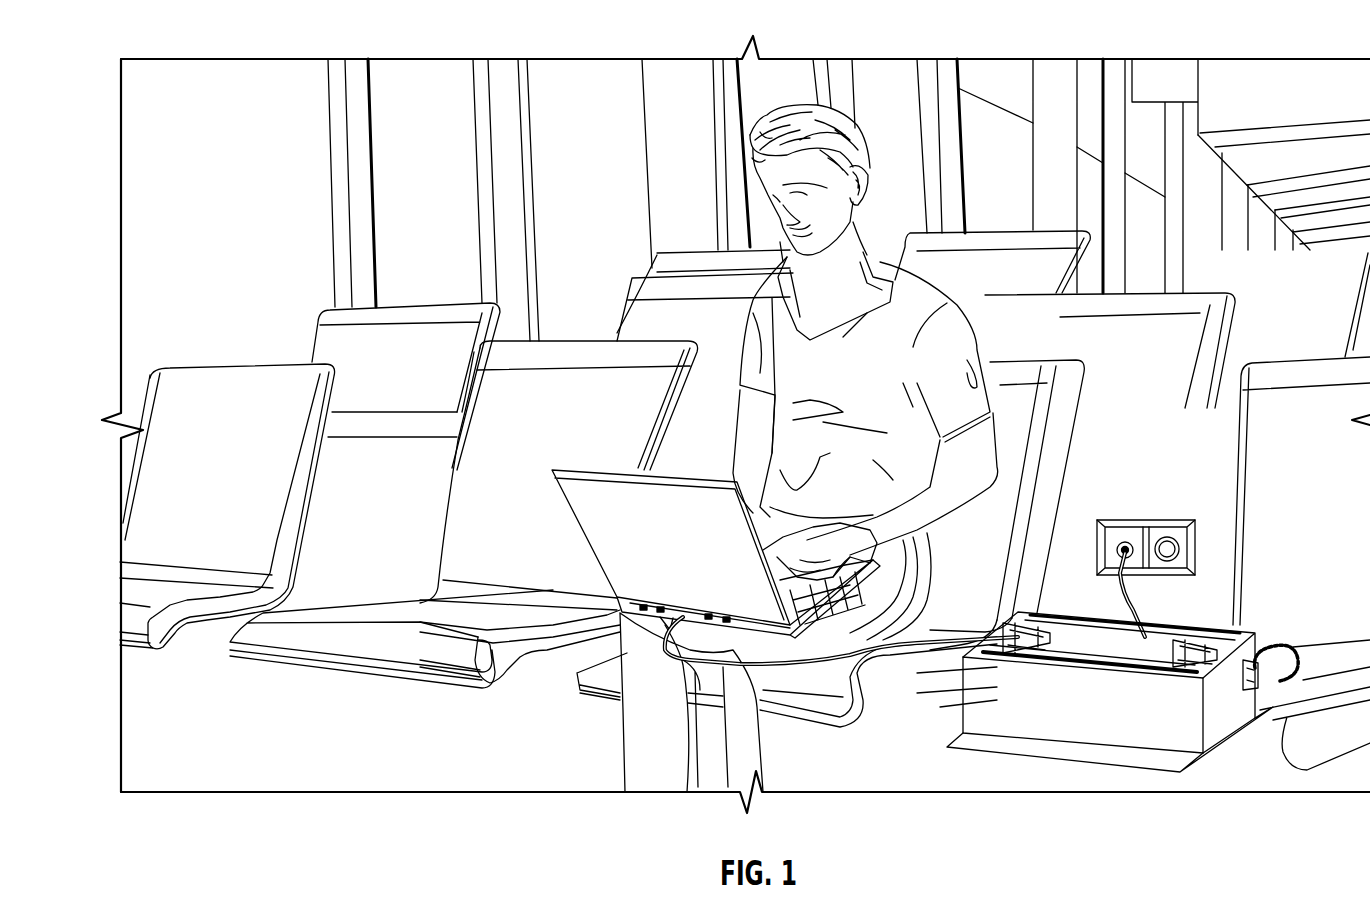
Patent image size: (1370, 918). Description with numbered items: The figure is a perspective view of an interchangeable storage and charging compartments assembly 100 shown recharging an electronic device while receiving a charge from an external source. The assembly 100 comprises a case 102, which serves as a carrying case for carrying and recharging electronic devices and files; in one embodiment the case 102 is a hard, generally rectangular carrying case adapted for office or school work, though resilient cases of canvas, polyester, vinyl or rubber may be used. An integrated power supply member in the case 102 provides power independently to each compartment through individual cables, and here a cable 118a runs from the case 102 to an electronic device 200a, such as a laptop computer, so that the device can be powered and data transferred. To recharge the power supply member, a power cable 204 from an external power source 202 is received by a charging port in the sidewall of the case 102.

The interchangeable storage and charging compartments assembly 100 is at (1207, 835).
The case 102 is at (1243, 730).
The cable 118a is at (850, 673).
The electronic device 200a is at (700, 563).
The external power source 202 is at (1163, 540).
The power cable 204 is at (1127, 590).